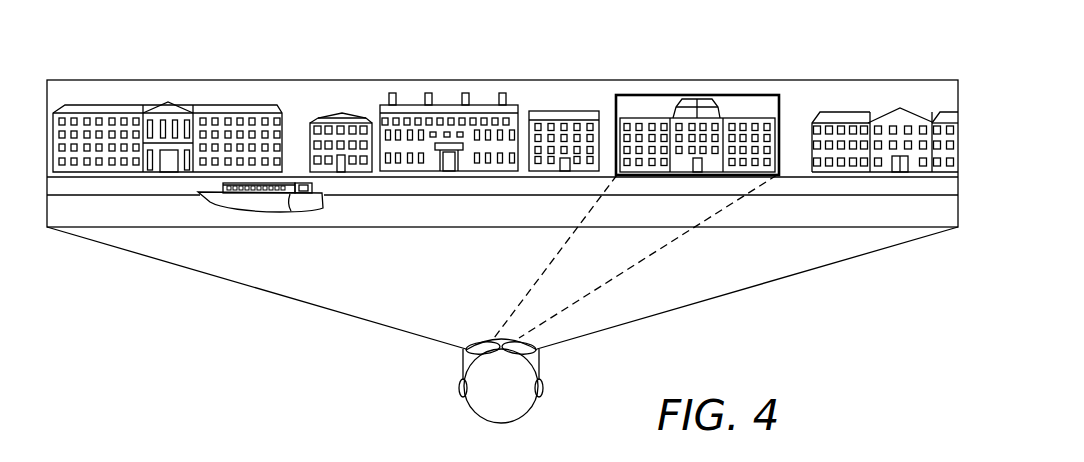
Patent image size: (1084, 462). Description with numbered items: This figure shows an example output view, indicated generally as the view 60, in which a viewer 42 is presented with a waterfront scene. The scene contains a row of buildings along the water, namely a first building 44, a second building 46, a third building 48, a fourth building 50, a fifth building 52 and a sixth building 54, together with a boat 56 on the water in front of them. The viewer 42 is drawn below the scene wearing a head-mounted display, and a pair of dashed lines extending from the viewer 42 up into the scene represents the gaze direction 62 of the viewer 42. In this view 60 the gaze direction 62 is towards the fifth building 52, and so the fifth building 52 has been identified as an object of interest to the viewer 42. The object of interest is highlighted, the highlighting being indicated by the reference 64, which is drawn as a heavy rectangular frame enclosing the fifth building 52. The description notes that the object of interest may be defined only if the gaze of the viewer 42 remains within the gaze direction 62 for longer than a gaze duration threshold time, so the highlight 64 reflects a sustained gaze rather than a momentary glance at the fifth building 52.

The viewer 42 is at (470, 411).
The first building 44 is at (168, 102).
The second building 46 is at (342, 113).
The third building 48 is at (448, 105).
The fourth building 50 is at (563, 111).
The fifth building 52 is at (696, 100).
The sixth building 54 is at (898, 108).
The boat 56 is at (273, 208).
The view 60 is at (137, 302).
The gaze direction 62 is at (536, 280).
The highlight of object of interest 64 is at (750, 95).